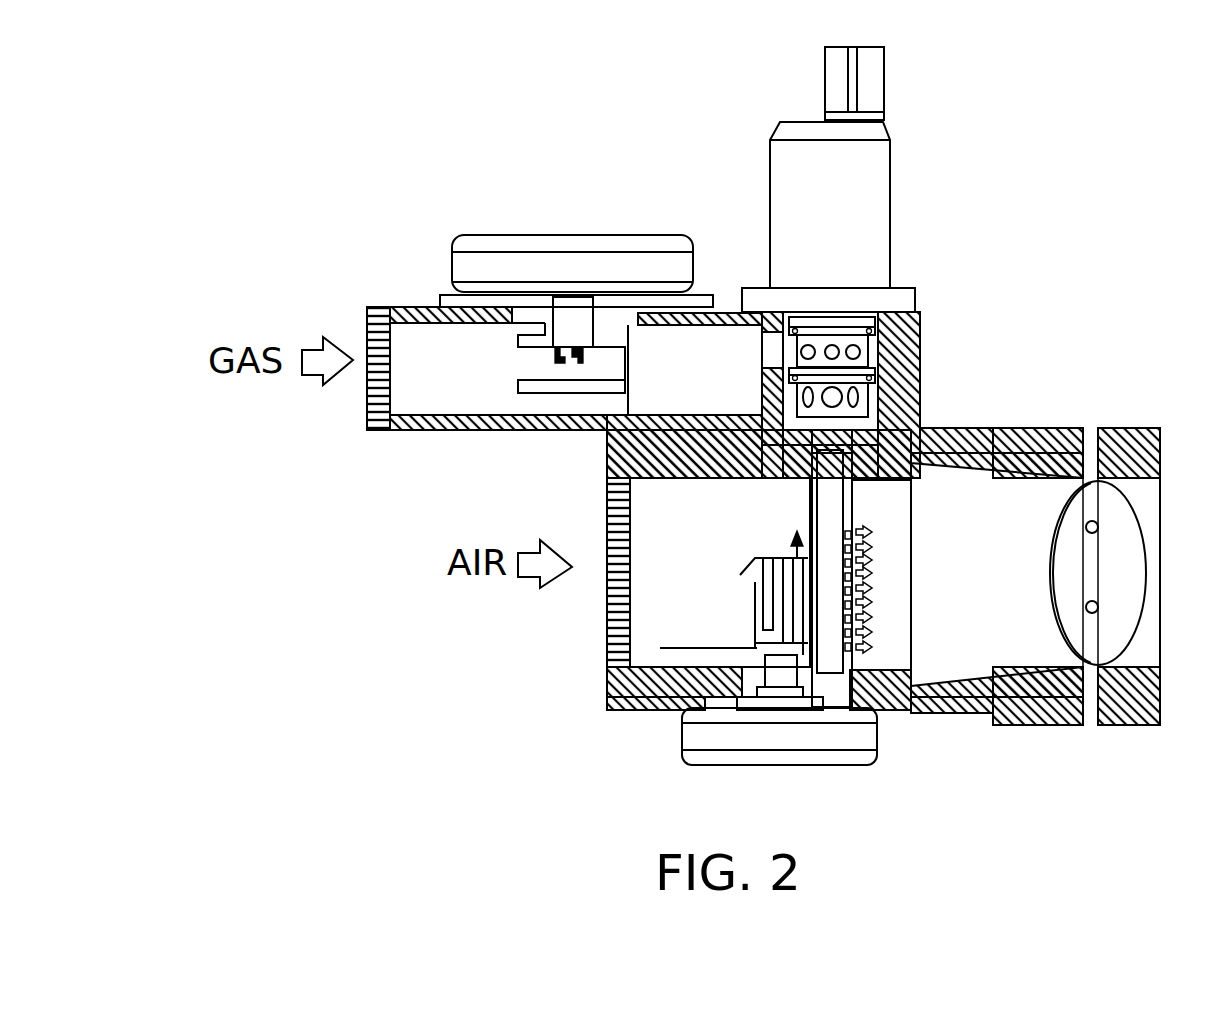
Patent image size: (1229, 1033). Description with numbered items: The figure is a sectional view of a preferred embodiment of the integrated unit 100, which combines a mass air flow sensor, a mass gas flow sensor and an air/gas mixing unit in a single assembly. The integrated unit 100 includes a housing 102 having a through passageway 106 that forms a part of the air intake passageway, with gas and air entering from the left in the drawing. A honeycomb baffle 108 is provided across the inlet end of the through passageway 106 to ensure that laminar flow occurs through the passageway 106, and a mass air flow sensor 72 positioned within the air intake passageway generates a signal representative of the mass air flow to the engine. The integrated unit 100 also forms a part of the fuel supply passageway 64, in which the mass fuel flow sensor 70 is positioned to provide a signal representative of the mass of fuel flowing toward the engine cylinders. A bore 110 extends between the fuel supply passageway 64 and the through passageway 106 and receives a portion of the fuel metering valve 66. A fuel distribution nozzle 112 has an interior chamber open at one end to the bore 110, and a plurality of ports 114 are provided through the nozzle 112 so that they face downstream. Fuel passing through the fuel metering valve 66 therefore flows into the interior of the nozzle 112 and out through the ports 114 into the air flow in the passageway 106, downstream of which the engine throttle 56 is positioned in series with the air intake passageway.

The engine throttle 56 is at (1130, 515).
The fuel supply passageway 64 is at (405, 330).
The fuel metering valve 66 is at (882, 157).
The mass fuel flow sensor 70 is at (647, 237).
The mass air flow sensor 72 is at (698, 757).
The integrated unit 100 is at (945, 233).
The housing 102 is at (648, 710).
The through passageway 106 is at (657, 590).
The honeycomb baffle 108 is at (607, 485).
The bore 110 is at (875, 418).
The fuel distribution nozzle 112 is at (830, 507).
The ports 114 is at (856, 547).